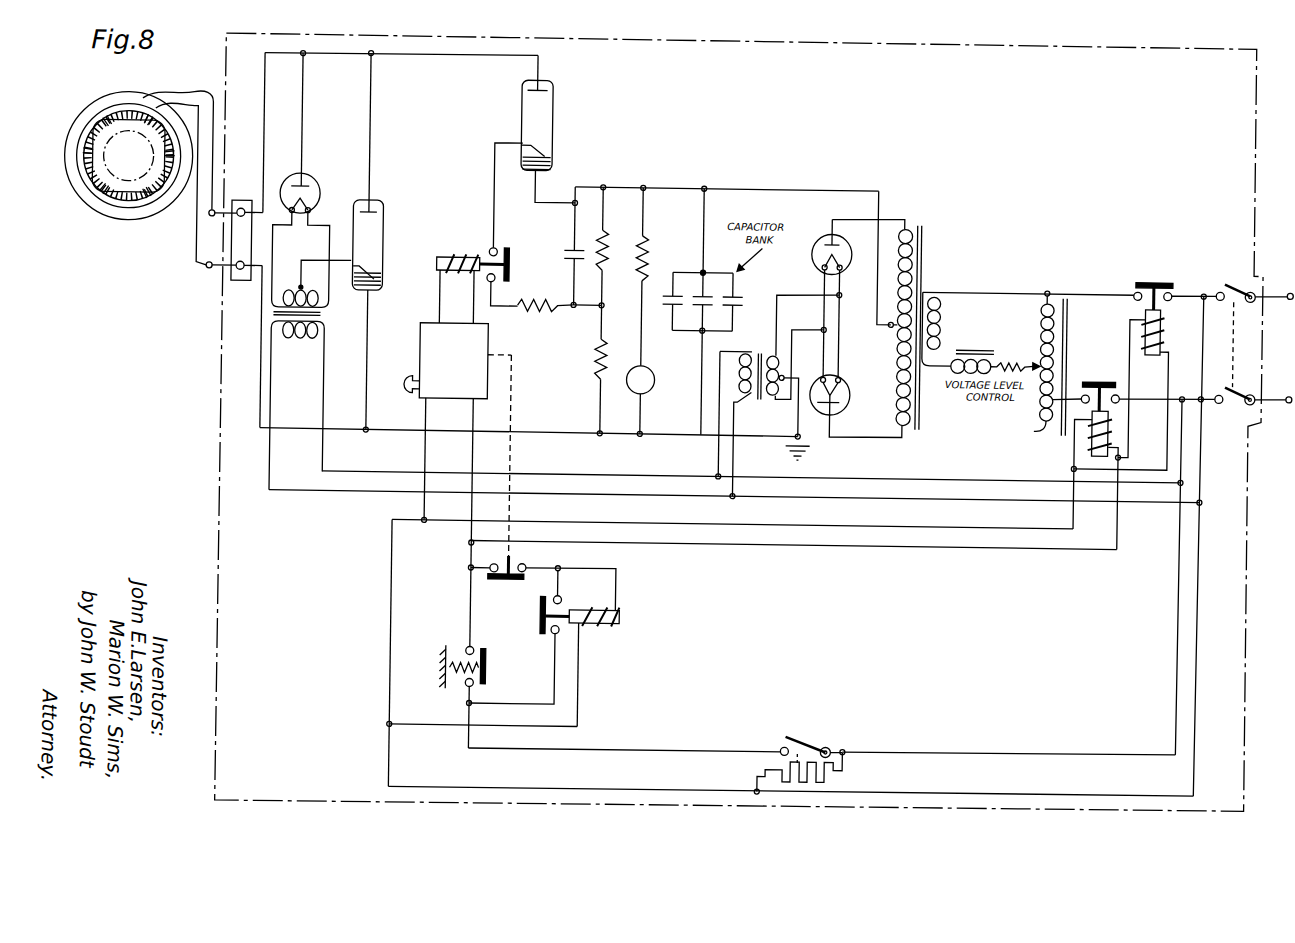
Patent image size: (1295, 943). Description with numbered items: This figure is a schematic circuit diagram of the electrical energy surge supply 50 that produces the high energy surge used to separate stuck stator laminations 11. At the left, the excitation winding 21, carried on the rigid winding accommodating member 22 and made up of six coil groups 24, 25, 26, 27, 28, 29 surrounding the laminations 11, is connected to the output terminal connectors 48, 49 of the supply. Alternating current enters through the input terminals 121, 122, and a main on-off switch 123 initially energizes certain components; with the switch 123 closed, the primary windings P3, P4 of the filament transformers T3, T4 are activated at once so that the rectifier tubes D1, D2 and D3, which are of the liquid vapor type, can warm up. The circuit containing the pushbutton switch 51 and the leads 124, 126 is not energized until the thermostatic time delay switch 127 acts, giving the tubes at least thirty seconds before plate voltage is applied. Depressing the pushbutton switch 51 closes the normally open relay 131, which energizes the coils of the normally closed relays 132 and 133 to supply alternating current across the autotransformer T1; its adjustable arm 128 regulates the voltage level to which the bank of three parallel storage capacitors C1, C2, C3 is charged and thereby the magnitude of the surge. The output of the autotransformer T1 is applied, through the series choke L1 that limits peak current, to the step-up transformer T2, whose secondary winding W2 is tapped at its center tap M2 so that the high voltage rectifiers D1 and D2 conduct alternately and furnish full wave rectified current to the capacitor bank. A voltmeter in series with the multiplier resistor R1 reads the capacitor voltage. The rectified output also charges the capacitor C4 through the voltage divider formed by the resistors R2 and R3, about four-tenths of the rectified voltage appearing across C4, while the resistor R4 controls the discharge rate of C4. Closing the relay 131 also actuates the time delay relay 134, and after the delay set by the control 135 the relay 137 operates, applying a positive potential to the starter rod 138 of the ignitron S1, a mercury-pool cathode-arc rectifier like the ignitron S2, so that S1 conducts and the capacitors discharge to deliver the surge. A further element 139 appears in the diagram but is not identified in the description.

The stator laminations 11 is at (111, 203).
The excitation winding 21 is at (139, 104).
The winding accommodating member 22 is at (101, 106).
The coil group 24 is at (121, 118).
The coil group 25 is at (161, 138).
The coil group 26 is at (86, 136).
The coil group 27 is at (84, 191).
The coil group 28 is at (129, 216).
The coil group 29 is at (169, 186).
The output terminal connector 48 is at (238, 206).
The output terminal connector 49 is at (238, 286).
The energy surge source 50 is at (962, 91).
The pushbutton switch 51 is at (490, 663).
The input terminal 121 is at (1266, 282).
The input terminal 122 is at (1273, 404).
The main on-off switch 123 is at (1230, 358).
The lead 124 is at (621, 741).
The lead 126 is at (633, 779).
The thermostatic time delay switch 127 is at (815, 738).
The adjustable arm 128 is at (1027, 359).
The normally open relay 131 is at (603, 632).
The normally closed relay 132 is at (1120, 434).
The normally closed relay 133 is at (1154, 349).
The time delay relay 134 is at (419, 344).
The control 135 is at (407, 395).
The relay 137 is at (461, 260).
The starter rod 138 is at (376, 272).
The relay contact 139 is at (510, 582).
The high voltage rectifier D1 is at (818, 233).
The high voltage rectifier D2 is at (850, 400).
The rectifier tube D3 is at (316, 196).
The ignitron S1 is at (550, 127).
The ignitron S2 is at (381, 223).
The multiplier resistor R1 is at (645, 246).
The resistor R2 is at (606, 239).
The resistor R3 is at (596, 362).
The resistor R4 is at (531, 303).
The storage capacitor C1 is at (667, 308).
The storage capacitor C2 is at (696, 308).
The storage capacitor C3 is at (733, 303).
The capacitor C4 is at (561, 255).
The autotransformer T1 is at (1034, 327).
The step-up transformer T2 is at (922, 274).
The filament transformer T3 is at (322, 305).
The filament transformer T4 is at (796, 377).
The primary winding P3 is at (318, 337).
The primary winding P4 is at (735, 423).
The secondary winding W2 is at (908, 228).
The center tap M2 is at (890, 326).
The choke L1 is at (983, 353).